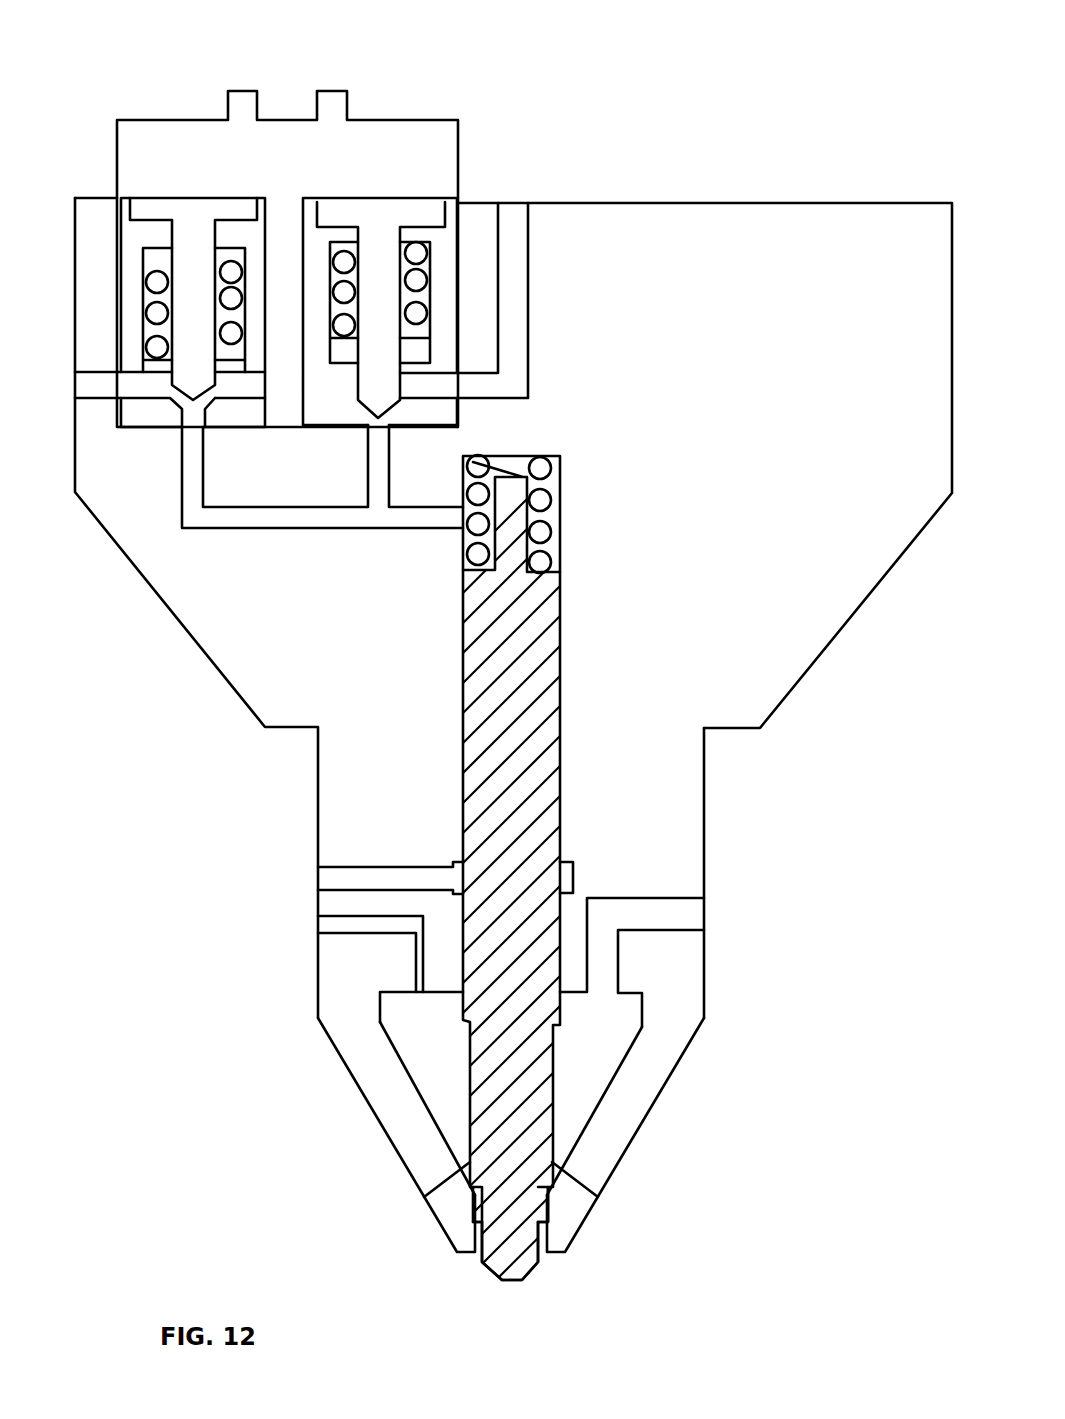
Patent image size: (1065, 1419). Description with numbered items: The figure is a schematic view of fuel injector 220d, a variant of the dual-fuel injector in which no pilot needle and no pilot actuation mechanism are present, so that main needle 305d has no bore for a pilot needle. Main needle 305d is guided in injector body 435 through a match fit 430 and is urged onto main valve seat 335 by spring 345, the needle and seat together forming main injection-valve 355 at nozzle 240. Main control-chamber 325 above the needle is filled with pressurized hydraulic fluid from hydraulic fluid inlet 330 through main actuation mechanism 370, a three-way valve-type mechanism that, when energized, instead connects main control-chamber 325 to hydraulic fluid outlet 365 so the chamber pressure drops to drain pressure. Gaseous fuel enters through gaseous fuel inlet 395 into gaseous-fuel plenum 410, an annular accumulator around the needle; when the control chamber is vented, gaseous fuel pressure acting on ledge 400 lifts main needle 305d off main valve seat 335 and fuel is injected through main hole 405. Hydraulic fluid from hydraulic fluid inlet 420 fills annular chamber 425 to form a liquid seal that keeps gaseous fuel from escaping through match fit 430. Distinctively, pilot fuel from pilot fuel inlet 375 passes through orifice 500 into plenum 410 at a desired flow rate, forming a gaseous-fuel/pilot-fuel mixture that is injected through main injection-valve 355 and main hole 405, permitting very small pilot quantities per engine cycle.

The fuel injector 220d is at (60, 96).
The main actuation mechanism 370 is at (190, 112).
The hydraulic fluid outlet 365 is at (514, 203).
The hydraulic fluid inlet 330 is at (75, 390).
The injector body 435 is at (705, 752).
The main needle 305d is at (480, 723).
The main control-chamber 325 is at (470, 548).
The spring 345 is at (555, 540).
The hydraulic fluid inlet 420 is at (318, 882).
The pilot fuel inlet 375 is at (318, 928).
The orifice 500 is at (417, 970).
The annular chamber 425 is at (573, 870).
The gaseous fuel inlet 395 is at (705, 917).
The match fit 430 is at (560, 940).
The ledge 400 is at (470, 1028).
The gaseous-fuel plenum 410 is at (587, 1060).
The nozzle 240 is at (412, 1198).
The main hole 405 is at (450, 1218).
The main valve seat 335 is at (562, 1180).
The main injection-valve 355 is at (568, 1197).